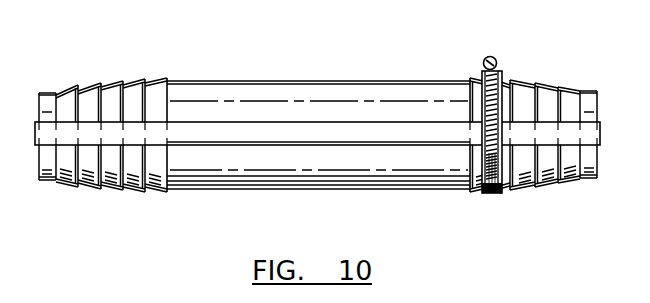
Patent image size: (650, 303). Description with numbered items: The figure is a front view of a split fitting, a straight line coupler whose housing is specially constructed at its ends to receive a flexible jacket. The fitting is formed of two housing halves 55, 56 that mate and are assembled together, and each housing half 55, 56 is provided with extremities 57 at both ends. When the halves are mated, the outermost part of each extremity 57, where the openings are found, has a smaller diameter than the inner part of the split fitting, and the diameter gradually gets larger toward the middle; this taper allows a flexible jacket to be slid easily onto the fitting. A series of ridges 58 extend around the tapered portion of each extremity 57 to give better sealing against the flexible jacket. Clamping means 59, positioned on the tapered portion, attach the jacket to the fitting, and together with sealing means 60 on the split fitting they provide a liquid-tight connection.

The housing half 55 is at (318, 201).
The housing half 56 is at (318, 74).
The extremities 57 is at (94, 194).
The ridges 58 is at (330, 107).
The clamping means 59 is at (521, 111).
The sealing means 60 is at (317, 122).